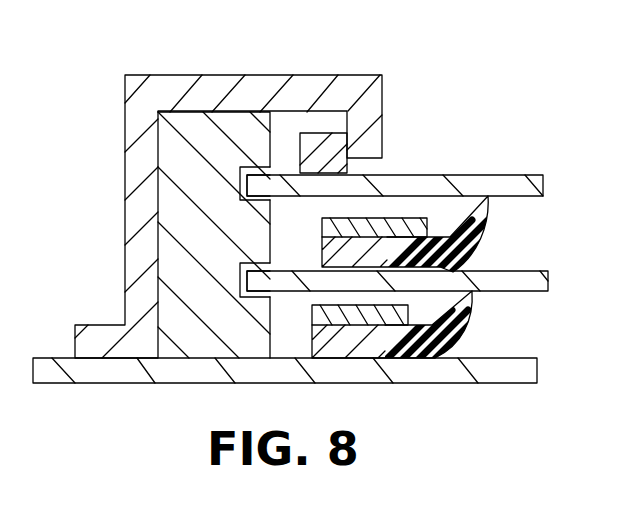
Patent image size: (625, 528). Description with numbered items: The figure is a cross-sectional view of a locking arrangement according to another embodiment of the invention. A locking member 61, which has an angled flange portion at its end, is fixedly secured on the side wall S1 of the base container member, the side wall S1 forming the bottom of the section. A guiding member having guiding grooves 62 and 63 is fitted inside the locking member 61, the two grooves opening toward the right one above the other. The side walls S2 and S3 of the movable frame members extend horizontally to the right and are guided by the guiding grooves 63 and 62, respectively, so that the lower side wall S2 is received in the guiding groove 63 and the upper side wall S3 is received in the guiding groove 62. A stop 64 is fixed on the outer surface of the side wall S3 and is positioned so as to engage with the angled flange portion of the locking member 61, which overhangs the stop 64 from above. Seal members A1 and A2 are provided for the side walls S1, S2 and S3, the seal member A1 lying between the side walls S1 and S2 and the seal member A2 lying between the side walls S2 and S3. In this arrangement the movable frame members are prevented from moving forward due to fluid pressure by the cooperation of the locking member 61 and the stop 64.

The locking member 61 is at (256, 90).
The guiding groove 62 is at (258, 176).
The guiding groove 63 is at (256, 281).
The stop 64 is at (336, 158).
The side wall S1 is at (298, 384).
The side wall S2 is at (534, 271).
The side wall S3 is at (499, 175).
The seal member A1 is at (456, 330).
The seal member A2 is at (478, 228).